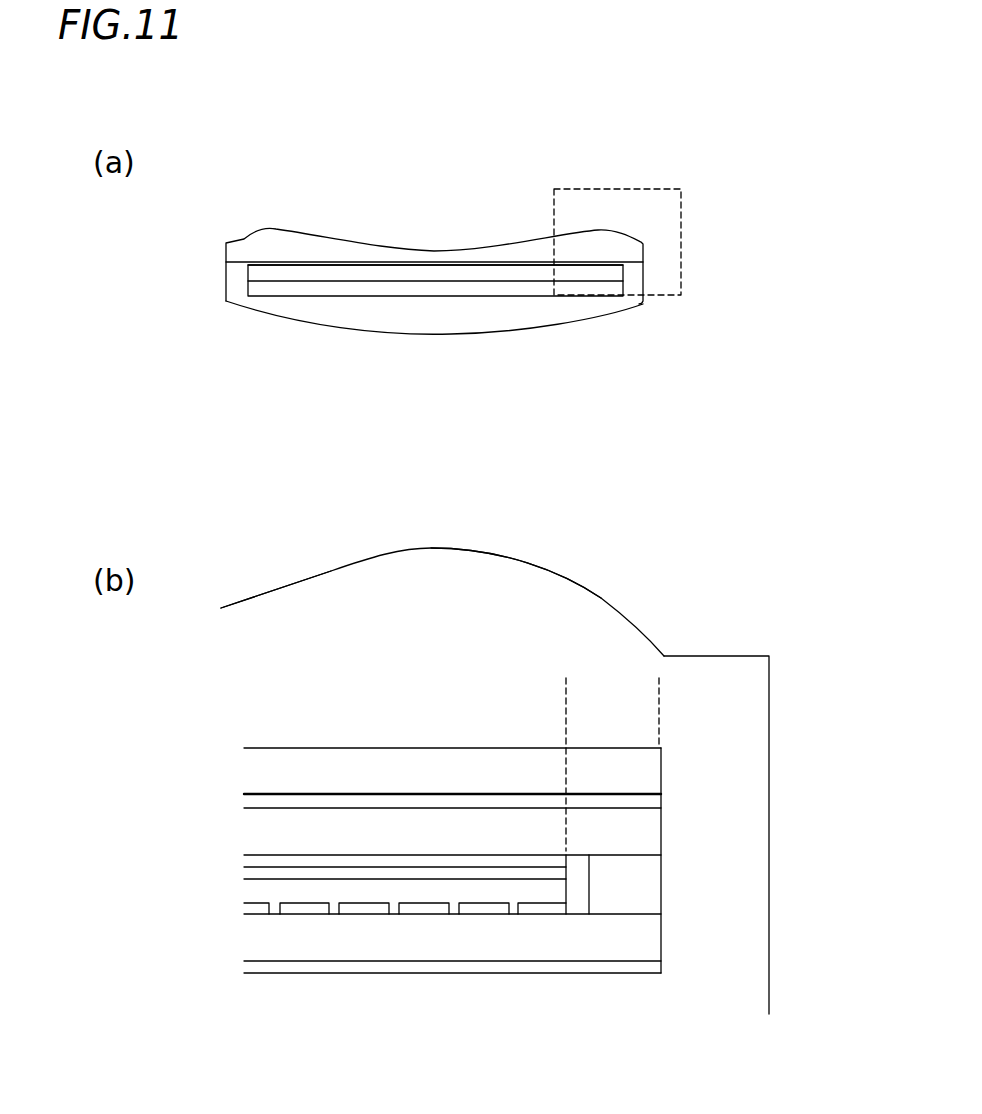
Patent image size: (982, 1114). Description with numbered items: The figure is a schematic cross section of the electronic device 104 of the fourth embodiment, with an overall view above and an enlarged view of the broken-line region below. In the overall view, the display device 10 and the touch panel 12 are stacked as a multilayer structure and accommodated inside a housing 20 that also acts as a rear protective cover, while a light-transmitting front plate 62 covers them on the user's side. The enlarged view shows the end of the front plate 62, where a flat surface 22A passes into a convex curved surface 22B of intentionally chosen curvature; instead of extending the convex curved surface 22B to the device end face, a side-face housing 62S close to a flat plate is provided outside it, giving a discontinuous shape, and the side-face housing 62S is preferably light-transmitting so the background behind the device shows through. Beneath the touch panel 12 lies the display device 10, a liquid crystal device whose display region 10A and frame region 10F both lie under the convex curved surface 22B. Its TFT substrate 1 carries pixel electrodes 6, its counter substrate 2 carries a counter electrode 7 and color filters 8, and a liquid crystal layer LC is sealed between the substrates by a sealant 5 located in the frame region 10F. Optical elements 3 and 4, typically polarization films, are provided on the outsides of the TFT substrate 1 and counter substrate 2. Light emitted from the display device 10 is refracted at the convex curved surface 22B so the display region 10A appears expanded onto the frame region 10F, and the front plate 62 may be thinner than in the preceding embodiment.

The electronic device 104 is at (733, 171).
The front plate 62 is at (612, 235).
The touch panel 12 is at (247, 273).
The display device 10 is at (253, 293).
The housing 20 is at (288, 313).
The flat surface portion of the front plate 22A is at (272, 588).
The convex curved surface 22B is at (525, 558).
The side-face housing 62S is at (715, 683).
The display region 10A is at (556, 693).
The frame region 10F is at (657, 693).
The optical element 4 is at (653, 799).
The counter substrate 2 is at (647, 833).
The liquid crystal layer LC is at (578, 887).
The TFT substrate 1 is at (650, 938).
The optical element 3 is at (653, 963).
The color filters 8 is at (353, 863).
The counter electrode 7 is at (421, 873).
The pixel electrodes 6 is at (492, 907).
The sealant 5 is at (615, 902).